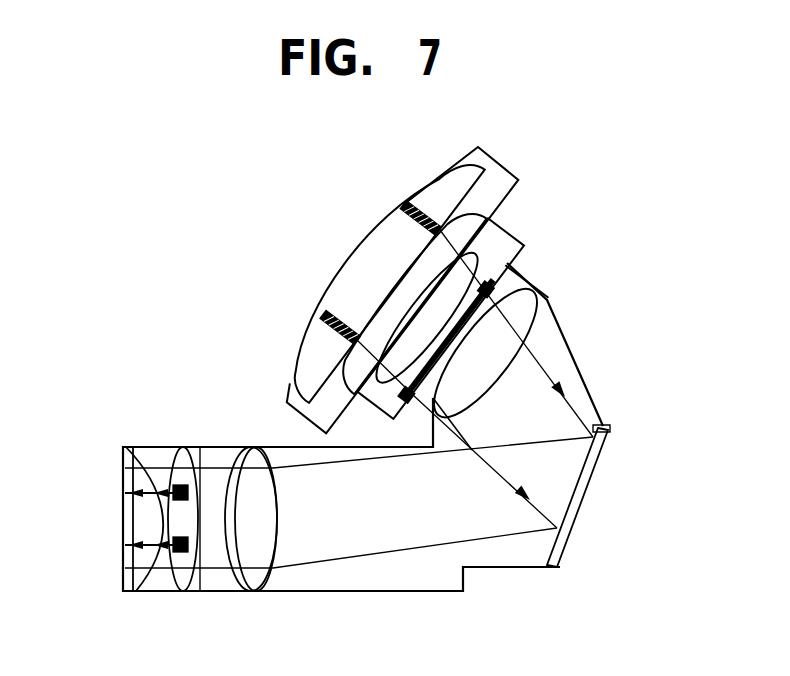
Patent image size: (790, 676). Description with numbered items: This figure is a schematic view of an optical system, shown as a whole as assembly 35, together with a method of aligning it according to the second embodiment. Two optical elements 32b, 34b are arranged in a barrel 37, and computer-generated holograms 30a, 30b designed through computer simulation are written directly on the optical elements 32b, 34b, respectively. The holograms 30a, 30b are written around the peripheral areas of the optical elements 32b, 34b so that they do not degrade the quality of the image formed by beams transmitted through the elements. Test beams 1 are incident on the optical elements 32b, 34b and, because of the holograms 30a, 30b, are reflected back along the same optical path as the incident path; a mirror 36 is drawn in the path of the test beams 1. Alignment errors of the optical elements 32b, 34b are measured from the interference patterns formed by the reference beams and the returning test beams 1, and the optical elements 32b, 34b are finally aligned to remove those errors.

The test beam 1 is at (533, 357).
The CGH 30a is at (200, 465).
The CGH 30b is at (403, 207).
The optical element 32b is at (183, 452).
The optical element 34b is at (436, 192).
The lens assembly 35 is at (191, 226).
The mirror 36 is at (581, 494).
The barrel 37 is at (516, 584).